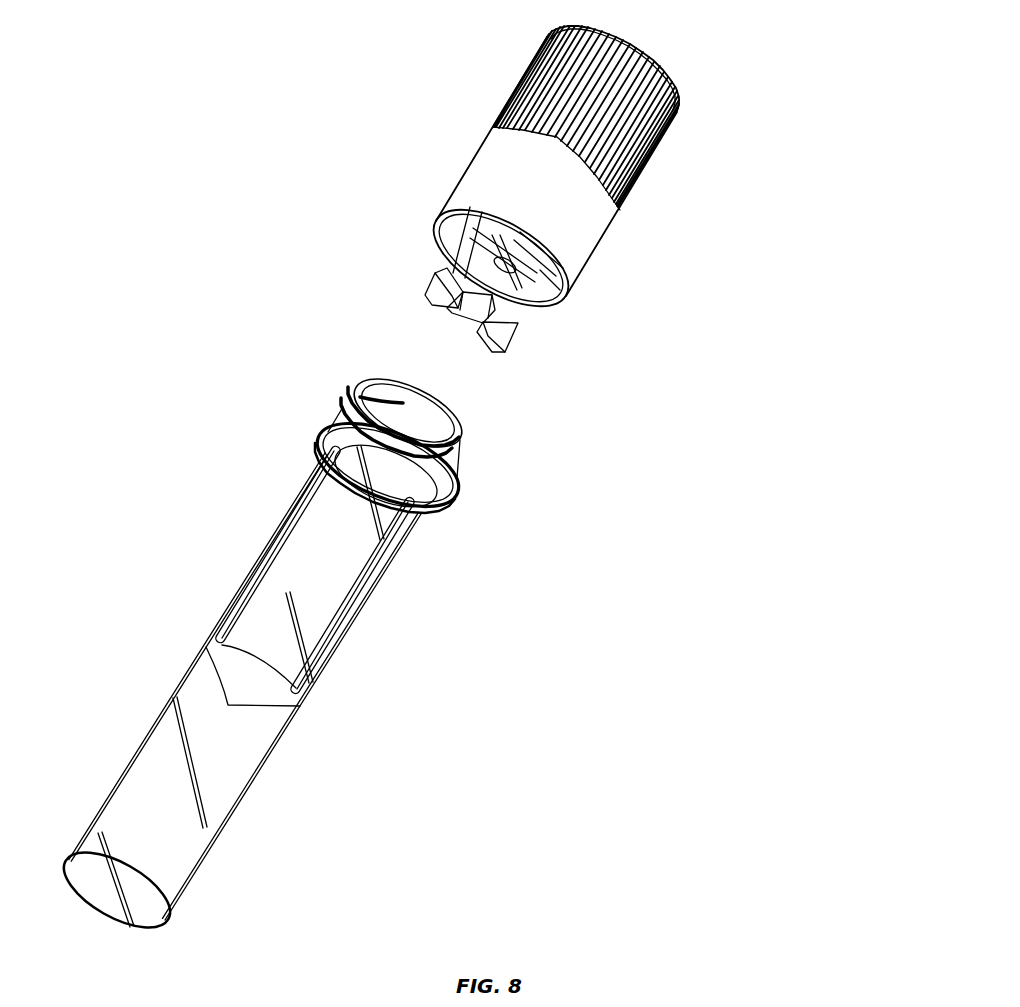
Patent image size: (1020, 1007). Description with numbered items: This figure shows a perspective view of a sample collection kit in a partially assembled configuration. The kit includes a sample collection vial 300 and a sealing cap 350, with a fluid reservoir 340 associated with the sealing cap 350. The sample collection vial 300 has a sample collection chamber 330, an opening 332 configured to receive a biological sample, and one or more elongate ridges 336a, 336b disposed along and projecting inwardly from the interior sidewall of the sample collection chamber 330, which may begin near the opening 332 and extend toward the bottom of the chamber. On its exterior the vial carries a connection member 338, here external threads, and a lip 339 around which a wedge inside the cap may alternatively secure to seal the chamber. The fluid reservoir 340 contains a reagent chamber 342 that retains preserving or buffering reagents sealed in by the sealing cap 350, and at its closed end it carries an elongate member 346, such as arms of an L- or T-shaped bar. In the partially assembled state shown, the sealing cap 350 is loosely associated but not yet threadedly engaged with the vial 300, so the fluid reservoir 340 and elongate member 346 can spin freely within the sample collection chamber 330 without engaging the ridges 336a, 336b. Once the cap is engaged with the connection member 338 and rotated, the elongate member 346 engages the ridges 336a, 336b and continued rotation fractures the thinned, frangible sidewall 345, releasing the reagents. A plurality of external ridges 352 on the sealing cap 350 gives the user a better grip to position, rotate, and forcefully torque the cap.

The sample collection vial 300 is at (430, 484).
The sample collection chamber 330 is at (294, 637).
The opening 332 is at (420, 412).
The elongate ridge 336a is at (212, 612).
The elongate ridge 336b is at (340, 628).
The connection member 338 is at (352, 397).
The lip 339 is at (432, 490).
The fluid reservoir 340 is at (552, 285).
The reagent chamber 342 is at (475, 230).
The frangible sidewall 345 is at (503, 263).
The elongate member 346 is at (498, 333).
The sealing cap 350 is at (580, 219).
The external ridges 352 is at (663, 145).